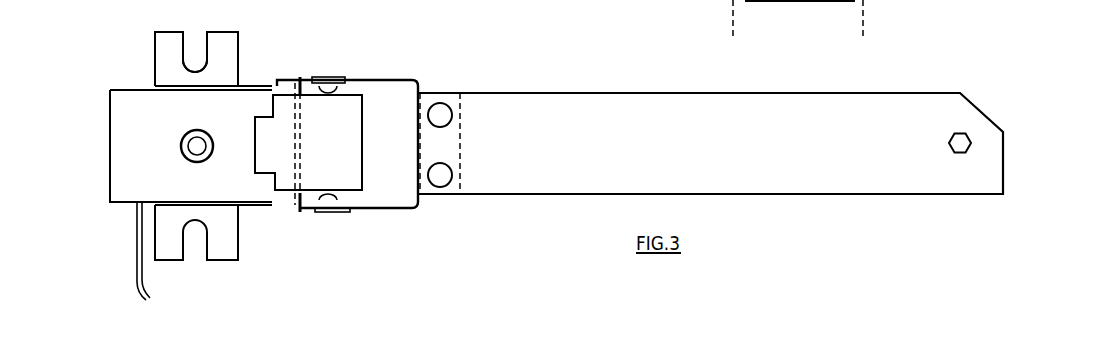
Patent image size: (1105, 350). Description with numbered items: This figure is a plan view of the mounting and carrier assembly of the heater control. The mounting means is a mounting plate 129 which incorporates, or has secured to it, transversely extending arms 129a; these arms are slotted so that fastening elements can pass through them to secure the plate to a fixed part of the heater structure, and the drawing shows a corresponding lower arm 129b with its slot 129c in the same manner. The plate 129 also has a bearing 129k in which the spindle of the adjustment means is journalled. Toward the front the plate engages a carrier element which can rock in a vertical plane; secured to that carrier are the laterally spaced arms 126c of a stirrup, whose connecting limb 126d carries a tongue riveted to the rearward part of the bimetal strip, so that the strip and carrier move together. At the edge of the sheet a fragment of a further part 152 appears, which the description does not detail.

The mounting plate 129 is at (133, 101).
The transversely extending arms 129a is at (233, 61).
The lower slotted tab 129b is at (201, 248).
The tab slot 129c is at (203, 40).
The bearing 129k is at (188, 153).
The laterally spaced arms of stirrup 126c is at (392, 77).
The connecting limb 126d is at (421, 91).
The housing portion 152 is at (789, 0).